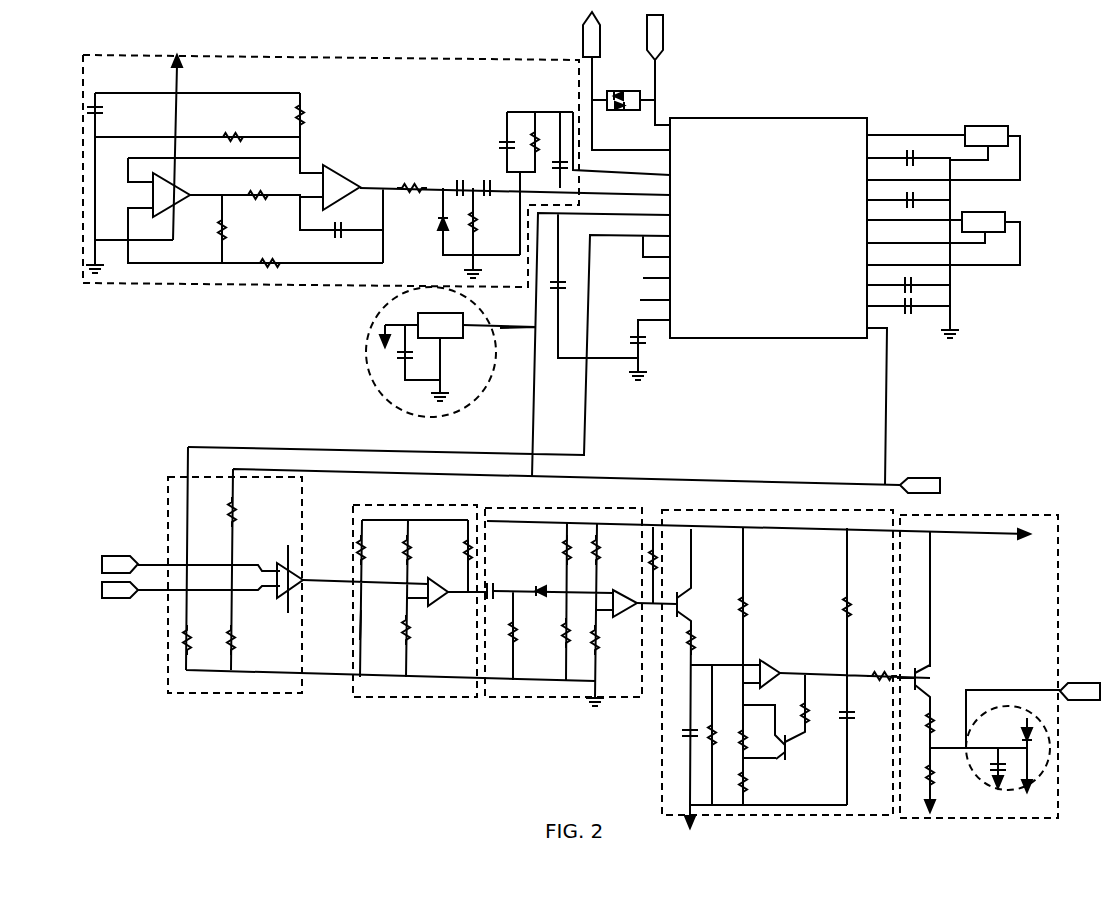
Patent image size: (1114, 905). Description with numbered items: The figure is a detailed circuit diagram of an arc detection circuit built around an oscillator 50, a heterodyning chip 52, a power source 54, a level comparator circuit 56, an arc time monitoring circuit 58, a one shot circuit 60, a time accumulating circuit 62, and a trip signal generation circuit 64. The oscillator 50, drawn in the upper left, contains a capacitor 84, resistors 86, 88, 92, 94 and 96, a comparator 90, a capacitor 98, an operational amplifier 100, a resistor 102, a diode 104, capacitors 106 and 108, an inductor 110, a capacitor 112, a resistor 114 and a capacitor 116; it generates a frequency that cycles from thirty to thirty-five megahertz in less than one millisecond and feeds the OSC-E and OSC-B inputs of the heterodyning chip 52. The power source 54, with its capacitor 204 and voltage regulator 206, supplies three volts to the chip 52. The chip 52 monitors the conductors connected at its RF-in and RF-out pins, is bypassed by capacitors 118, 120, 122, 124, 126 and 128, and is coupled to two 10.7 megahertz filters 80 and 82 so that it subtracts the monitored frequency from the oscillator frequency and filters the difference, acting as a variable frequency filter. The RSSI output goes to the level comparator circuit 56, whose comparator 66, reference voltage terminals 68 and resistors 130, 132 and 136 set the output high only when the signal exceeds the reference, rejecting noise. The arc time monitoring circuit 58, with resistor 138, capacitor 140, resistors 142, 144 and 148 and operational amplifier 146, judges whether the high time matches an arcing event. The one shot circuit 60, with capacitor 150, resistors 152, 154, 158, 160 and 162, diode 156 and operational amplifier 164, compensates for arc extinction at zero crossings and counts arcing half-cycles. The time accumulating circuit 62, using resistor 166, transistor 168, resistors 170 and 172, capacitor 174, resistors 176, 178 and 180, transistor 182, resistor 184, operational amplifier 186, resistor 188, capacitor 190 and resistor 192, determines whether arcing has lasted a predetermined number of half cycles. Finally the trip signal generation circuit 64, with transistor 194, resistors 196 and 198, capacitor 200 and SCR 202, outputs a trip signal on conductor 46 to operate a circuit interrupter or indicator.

The conductor 46 is at (1083, 683).
The oscillator 50 is at (193, 48).
The heterodyning chip 52 is at (797, 112).
The power source 54 is at (423, 352).
The level comparator circuit 56 is at (198, 707).
The arc time monitoring circuit 58 is at (393, 709).
The one shot circuit 60 is at (521, 707).
The time accumulating circuit 62 is at (756, 825).
The trip signal generation circuit 64 is at (971, 828).
The comparator 66 is at (304, 584).
The reference voltage terminals 68 is at (90, 574).
The 10.7 megahertz filter 80 is at (996, 126).
The 10.7 megahertz filter 82 is at (1002, 212).
The capacitor 84 is at (104, 110).
The resistor 86 is at (305, 118).
The resistor 88 is at (235, 132).
The comparator 90 is at (192, 196).
The resistor 92 is at (220, 224).
The resistor 94 is at (258, 200).
The resistor 96 is at (276, 268).
The capacitor 98 is at (333, 236).
The operational amplifier 100 is at (343, 180).
The resistor 102 is at (410, 181).
The diode 104 is at (437, 231).
The capacitor 106 is at (456, 181).
The capacitor 108 is at (486, 181).
The inductor 110 is at (479, 229).
The capacitor 112 is at (500, 142).
The resistor 114 is at (525, 125).
The capacitor 116 is at (557, 160).
The capacitor 118 is at (647, 341).
The capacitor 120 is at (912, 150).
The capacitor 122 is at (921, 200).
The capacitor 124 is at (919, 285).
The capacitor 126 is at (909, 316).
The capacitor 128 is at (562, 285).
The resistor 130 is at (192, 641).
The resistor 132 is at (236, 639).
The resistor 136 is at (237, 512).
The resistor 138 is at (389, 574).
The capacitor 140 is at (366, 625).
The resistor 142 is at (366, 562).
The resistor 144 is at (411, 630).
The operational amplifier 146 is at (440, 601).
The resistor 148 is at (464, 550).
The capacitor 150 is at (491, 582).
The resistor 152 is at (562, 551).
The resistor 154 is at (508, 636).
The diode 156 is at (534, 588).
The resistor 158 is at (561, 633).
The resistor 160 is at (598, 647).
The resistor 162 is at (599, 556).
The operational amplifier 164 is at (620, 618).
The resistor 166 is at (657, 562).
The transistor 168 is at (690, 601).
The resistor 170 is at (750, 606).
The resistor 172 is at (700, 642).
The capacitor 174 is at (682, 731).
The resistor 176 is at (708, 742).
The resistor 178 is at (751, 782).
The resistor 180 is at (745, 734).
The transistor 182 is at (790, 751).
The resistor 184 is at (801, 712).
The operational amplifier 186 is at (777, 663).
The resistor 188 is at (851, 607).
The capacitor 190 is at (851, 717).
The resistor 192 is at (880, 668).
The transistor 194 is at (922, 678).
The resistor 196 is at (935, 722).
The resistor 198 is at (921, 777).
The capacitor 200 is at (985, 768).
The SCR 202 is at (999, 775).
The capacitor 204 is at (398, 356).
The voltage regulator 206 is at (465, 339).